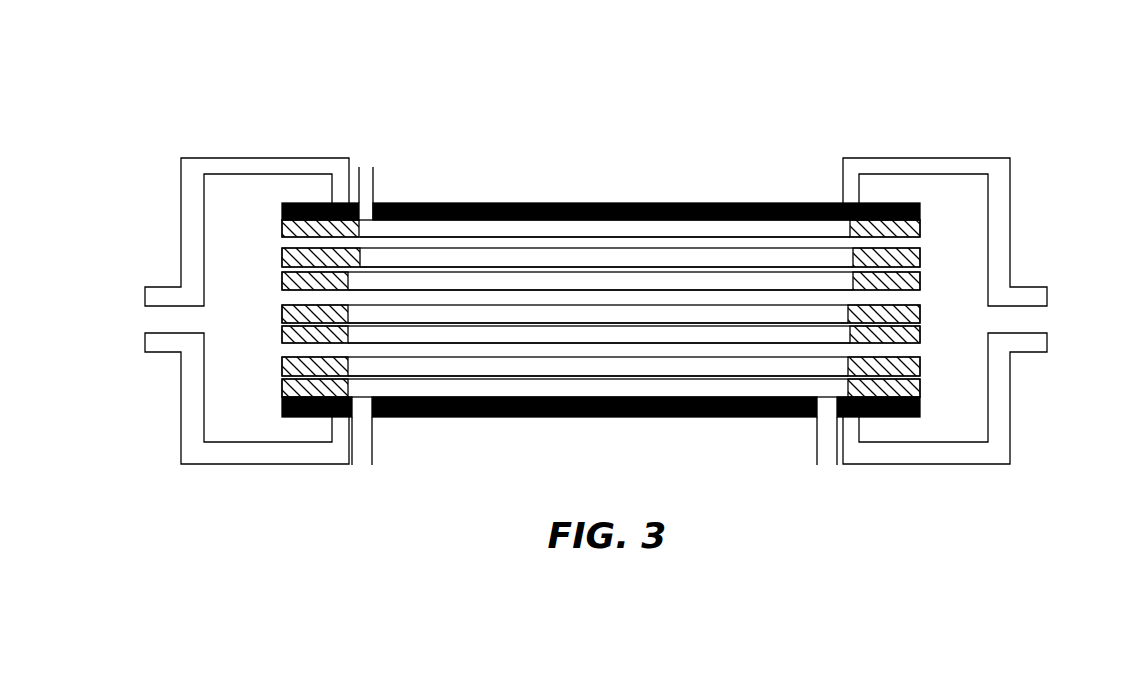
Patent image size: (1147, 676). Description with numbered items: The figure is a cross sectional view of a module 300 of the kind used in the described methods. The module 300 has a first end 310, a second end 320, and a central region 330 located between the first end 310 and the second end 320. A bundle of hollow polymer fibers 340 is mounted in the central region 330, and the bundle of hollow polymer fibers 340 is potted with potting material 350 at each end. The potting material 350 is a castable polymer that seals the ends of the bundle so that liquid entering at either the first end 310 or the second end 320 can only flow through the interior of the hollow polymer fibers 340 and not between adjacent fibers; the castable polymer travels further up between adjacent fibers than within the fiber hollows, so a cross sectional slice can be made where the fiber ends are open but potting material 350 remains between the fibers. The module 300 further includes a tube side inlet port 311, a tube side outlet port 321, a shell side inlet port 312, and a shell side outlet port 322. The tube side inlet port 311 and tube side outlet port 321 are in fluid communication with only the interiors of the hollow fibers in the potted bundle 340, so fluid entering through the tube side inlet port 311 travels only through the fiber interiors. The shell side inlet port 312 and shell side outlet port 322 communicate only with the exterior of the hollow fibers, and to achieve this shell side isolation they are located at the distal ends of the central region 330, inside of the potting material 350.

The module 300 is at (932, 35).
The first end 310 is at (208, 150).
The tube side inlet port 311 is at (142, 322).
The shell side inlet port 312 is at (370, 166).
The second end 320 is at (983, 158).
The tube side outlet port 321 is at (1037, 315).
The shell side outlet port 322 is at (826, 455).
The central region 330 is at (585, 193).
The bundle of hollow polymer fibers 340 is at (478, 325).
The potting material 350 is at (920, 315).